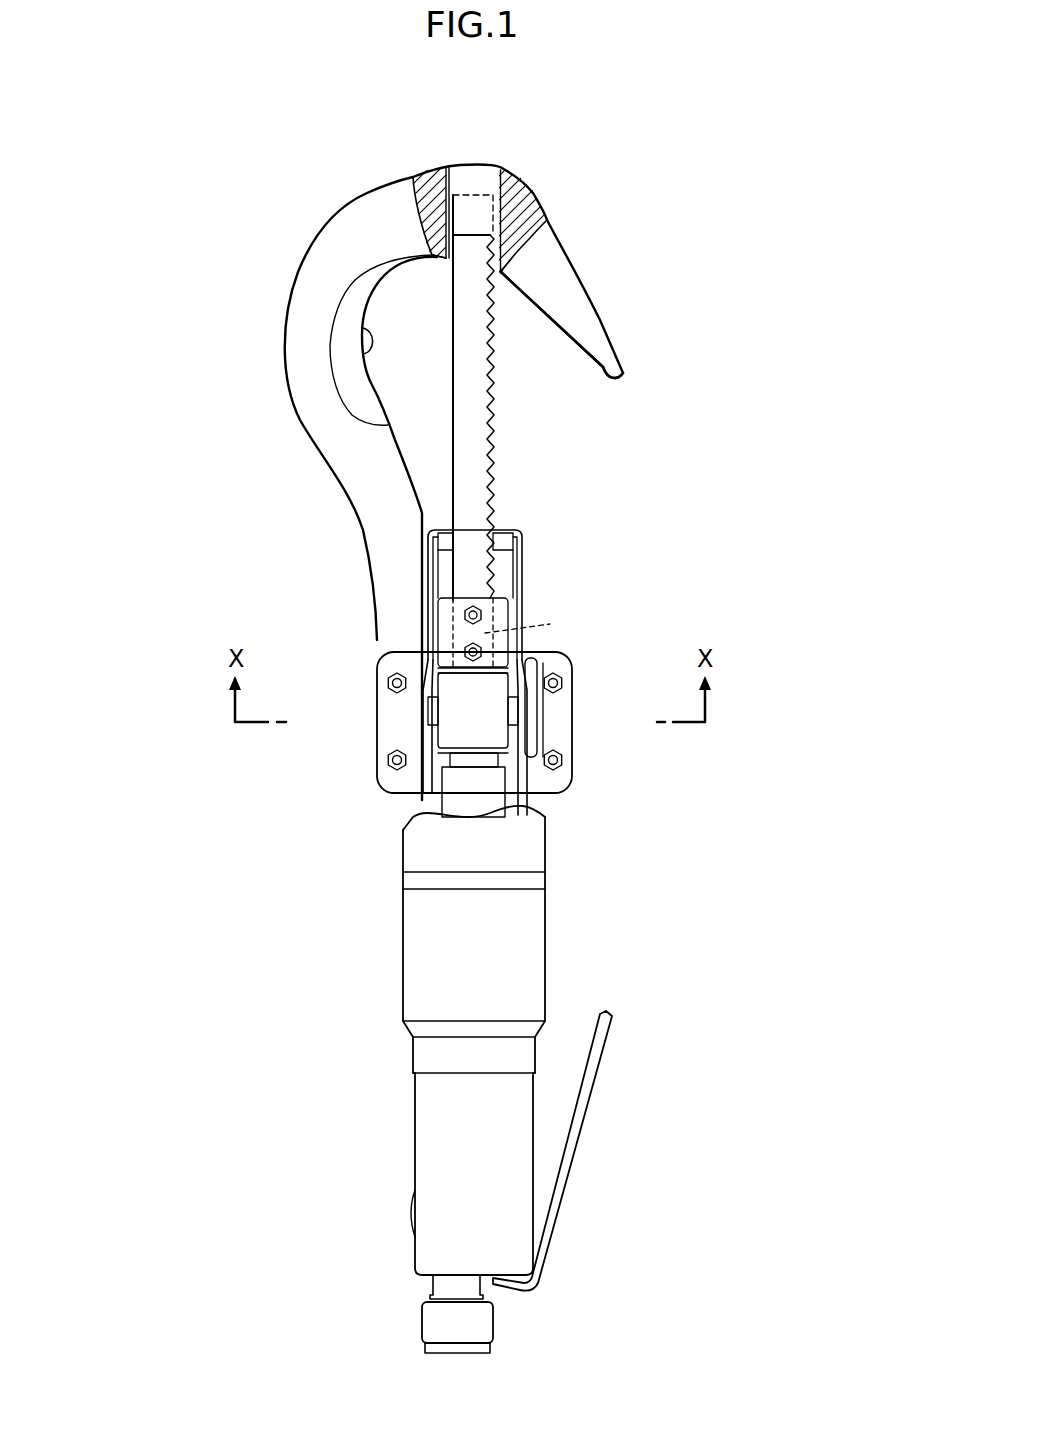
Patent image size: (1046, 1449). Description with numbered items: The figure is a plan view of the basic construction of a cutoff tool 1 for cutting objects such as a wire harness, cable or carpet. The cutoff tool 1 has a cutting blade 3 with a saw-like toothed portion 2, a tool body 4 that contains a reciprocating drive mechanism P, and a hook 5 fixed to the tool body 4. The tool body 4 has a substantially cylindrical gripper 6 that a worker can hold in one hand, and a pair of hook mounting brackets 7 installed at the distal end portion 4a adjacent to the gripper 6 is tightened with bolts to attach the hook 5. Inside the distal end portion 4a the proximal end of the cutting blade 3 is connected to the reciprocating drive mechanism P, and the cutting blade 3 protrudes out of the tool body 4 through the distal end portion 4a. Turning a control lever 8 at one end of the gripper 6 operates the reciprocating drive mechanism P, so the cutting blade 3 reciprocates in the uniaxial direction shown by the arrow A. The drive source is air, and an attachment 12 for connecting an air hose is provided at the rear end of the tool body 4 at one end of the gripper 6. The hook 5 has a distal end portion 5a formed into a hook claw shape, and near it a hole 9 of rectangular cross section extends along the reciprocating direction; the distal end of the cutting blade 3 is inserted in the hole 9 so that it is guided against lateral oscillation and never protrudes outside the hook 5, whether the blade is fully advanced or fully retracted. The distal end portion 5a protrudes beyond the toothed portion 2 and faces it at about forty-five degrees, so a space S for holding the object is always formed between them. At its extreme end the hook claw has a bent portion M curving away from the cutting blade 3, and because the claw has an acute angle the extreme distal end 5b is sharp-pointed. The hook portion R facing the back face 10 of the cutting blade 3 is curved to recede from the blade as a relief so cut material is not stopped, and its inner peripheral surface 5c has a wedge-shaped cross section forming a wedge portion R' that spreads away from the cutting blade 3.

The cutoff tool 1 is at (670, 480).
The toothed portion 2 is at (497, 397).
The cutting blade 3 is at (472, 458).
The tool body 4 is at (534, 852).
The distal end portion 4a is at (524, 578).
The hook 5 is at (298, 291).
The distal end portion 5a is at (603, 347).
The extreme distal end 5b is at (612, 371).
The inner peripheral surface 5c is at (373, 349).
The gripper 6 is at (531, 953).
The hook mounting brackets 7 is at (562, 692).
The control lever 8 is at (586, 1123).
The hole 9 is at (457, 166).
The back face 10 is at (452, 343).
The attachment 12 is at (484, 1325).
The hook portion R is at (275, 336).
The wedge portion R' is at (349, 224).
The space S is at (510, 312).
The bent portion M is at (606, 372).
The arrow A is at (562, 456).
The reciprocating drive mechanism P is at (466, 787).